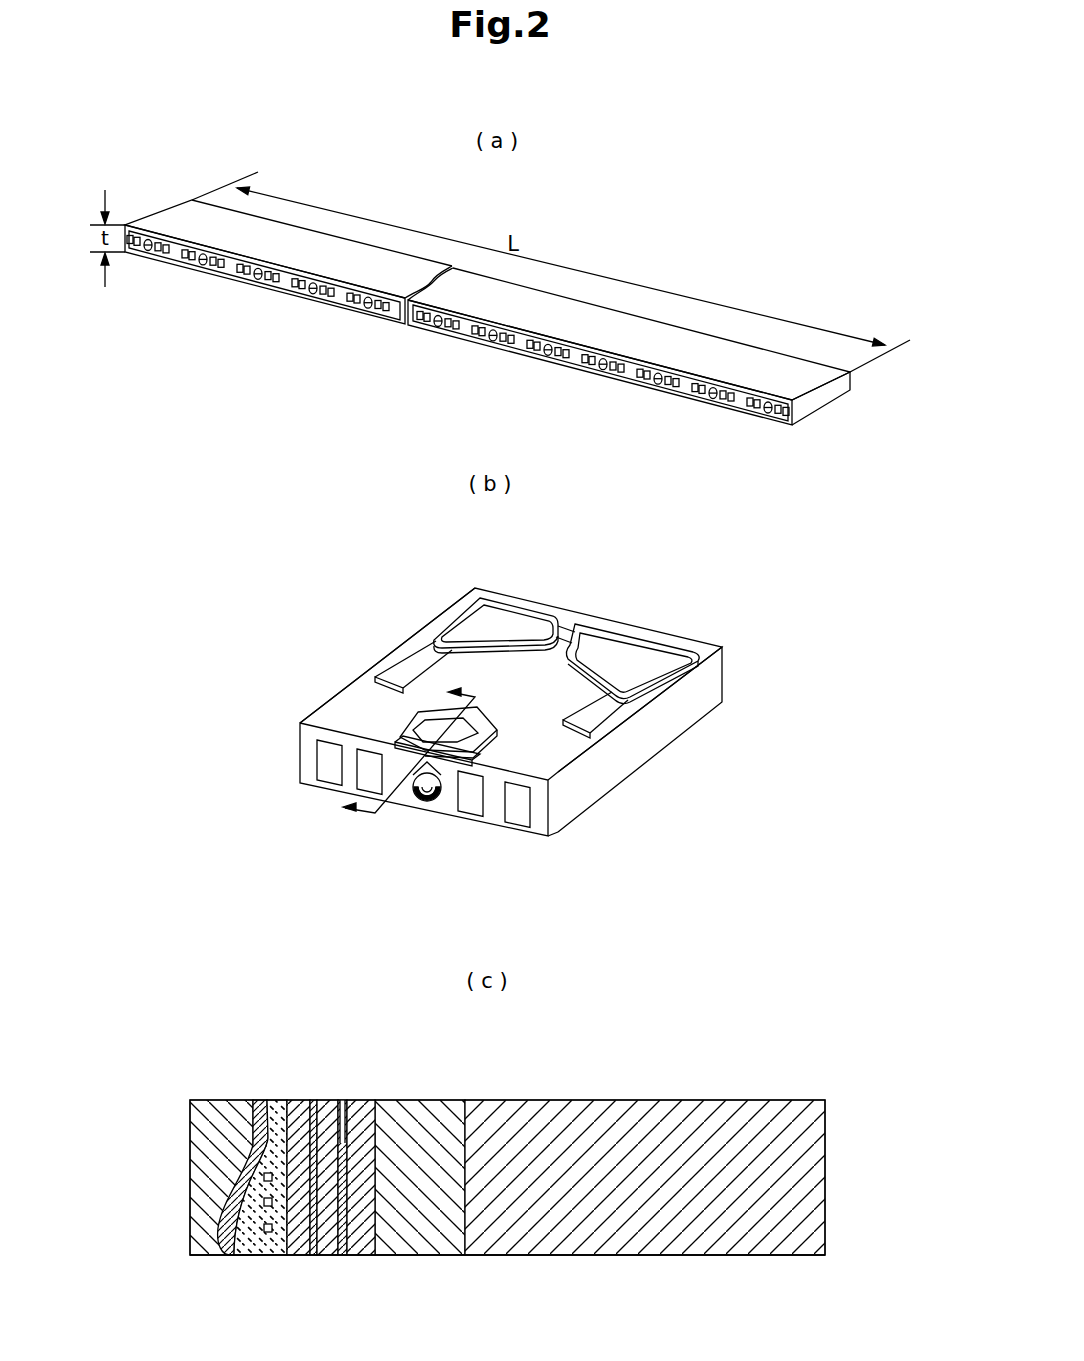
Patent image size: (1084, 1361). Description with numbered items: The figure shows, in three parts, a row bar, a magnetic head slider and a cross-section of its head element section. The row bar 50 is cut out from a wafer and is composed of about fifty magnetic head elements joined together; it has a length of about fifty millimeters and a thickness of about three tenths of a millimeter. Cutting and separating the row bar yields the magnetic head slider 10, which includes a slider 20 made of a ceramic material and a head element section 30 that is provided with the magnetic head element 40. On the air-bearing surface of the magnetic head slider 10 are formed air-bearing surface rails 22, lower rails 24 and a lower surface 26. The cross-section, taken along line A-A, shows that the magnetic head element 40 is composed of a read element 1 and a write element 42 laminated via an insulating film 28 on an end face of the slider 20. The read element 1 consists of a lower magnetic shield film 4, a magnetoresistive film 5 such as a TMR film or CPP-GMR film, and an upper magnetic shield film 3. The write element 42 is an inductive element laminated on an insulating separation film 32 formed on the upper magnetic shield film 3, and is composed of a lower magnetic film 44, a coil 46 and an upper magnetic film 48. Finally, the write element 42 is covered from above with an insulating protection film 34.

The row bar 50 is at (185, 212).
The magnetic head slider 10 is at (505, 715).
The slider 20 is at (573, 797).
The air-bearing surface rails 22 is at (505, 618).
The lower rails 24 is at (400, 663).
The lower surface 26 is at (352, 698).
The head element section 30 is at (553, 835).
The magnetic head element 40 is at (433, 800).
The insulating protection film 34 is at (202, 1126).
The write element 42 is at (262, 1131).
The upper magnetic film 48 is at (257, 1100).
The coil 46 is at (267, 1172).
The lower magnetic film 44 is at (297, 1153).
The read element 1 is at (346, 1136).
The upper magnetic shield film 3 is at (325, 1100).
The magnetoresistive film 5 is at (343, 1100).
The lower magnetic shield film 4 is at (361, 1156).
The insulating separation film 32 is at (306, 1255).
The insulating film 28 is at (408, 1255).